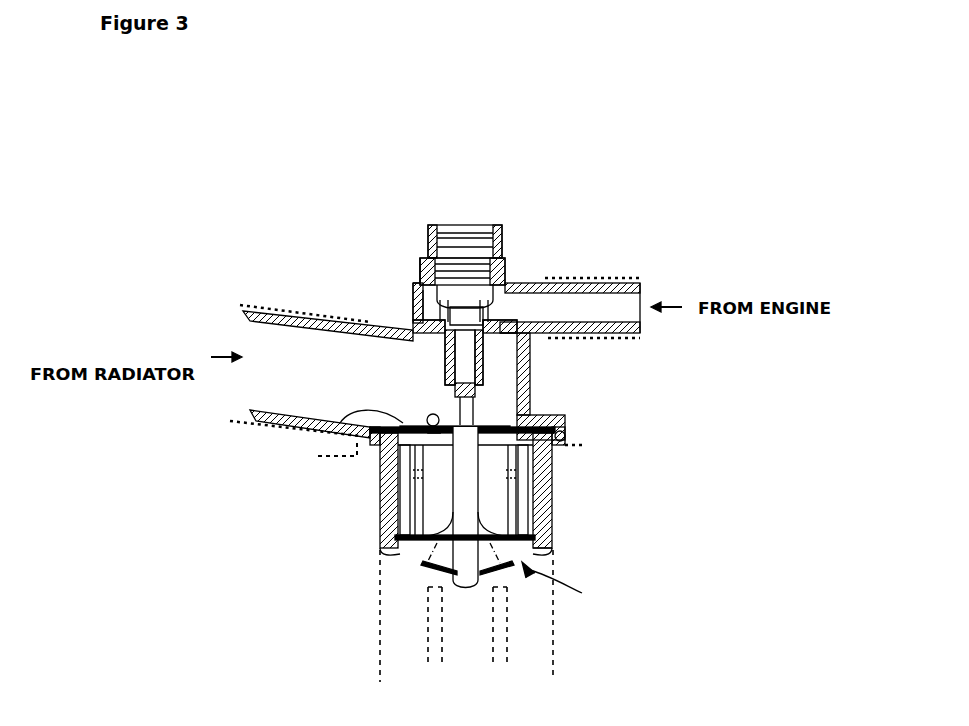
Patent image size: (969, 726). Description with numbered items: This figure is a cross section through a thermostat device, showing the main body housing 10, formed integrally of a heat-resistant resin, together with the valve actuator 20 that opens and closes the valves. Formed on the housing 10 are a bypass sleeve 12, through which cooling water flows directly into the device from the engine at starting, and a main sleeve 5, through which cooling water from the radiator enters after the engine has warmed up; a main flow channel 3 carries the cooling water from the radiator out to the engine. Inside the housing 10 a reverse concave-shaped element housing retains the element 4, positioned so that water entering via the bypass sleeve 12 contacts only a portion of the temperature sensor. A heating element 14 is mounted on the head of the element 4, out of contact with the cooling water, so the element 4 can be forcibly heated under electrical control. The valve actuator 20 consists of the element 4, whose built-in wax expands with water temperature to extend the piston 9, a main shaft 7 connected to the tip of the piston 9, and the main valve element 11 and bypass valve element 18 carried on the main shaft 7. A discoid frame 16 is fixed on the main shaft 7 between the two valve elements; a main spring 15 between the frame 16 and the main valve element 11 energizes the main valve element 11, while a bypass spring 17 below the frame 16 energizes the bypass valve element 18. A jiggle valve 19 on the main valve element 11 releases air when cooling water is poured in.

The main flow channel 3 is at (347, 430).
The element 4 is at (415, 280).
The main sleeve 5 is at (295, 312).
The main shaft 7 is at (480, 463).
The piston 9 is at (502, 427).
The main body housing 10 is at (430, 235).
The main valve element 11 is at (532, 428).
The bypass sleeve 12 is at (568, 282).
The heating element 14 is at (492, 222).
The main spring 15 is at (383, 502).
The discoid frame 16 is at (543, 555).
The bypass spring 17 is at (452, 540).
The bypass valve element 18 is at (500, 573).
The jiggle valve 19 is at (432, 416).
The valve actuator 20 is at (582, 593).